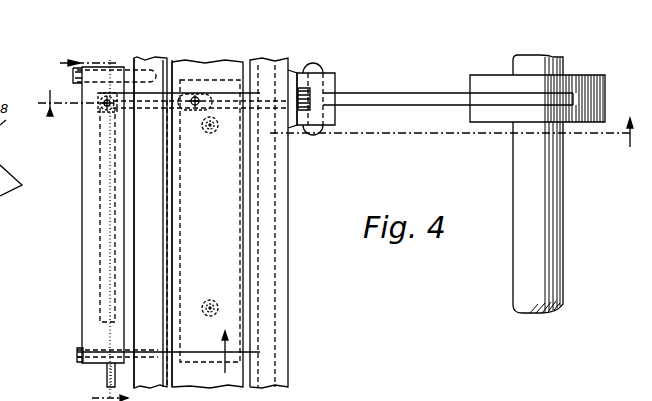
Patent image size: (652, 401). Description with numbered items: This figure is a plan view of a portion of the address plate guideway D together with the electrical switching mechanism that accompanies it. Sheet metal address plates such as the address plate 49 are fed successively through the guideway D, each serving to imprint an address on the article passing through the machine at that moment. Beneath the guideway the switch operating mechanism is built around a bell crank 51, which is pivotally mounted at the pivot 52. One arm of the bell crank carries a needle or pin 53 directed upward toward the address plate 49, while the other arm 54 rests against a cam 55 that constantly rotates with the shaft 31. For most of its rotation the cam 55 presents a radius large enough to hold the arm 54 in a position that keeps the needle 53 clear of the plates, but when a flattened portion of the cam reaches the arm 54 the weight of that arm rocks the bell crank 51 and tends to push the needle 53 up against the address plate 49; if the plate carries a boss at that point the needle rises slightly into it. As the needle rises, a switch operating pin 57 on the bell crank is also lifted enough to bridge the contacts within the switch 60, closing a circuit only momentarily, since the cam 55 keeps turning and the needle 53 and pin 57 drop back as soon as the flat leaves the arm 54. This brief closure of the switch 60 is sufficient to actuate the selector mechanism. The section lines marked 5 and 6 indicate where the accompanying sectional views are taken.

The shaft 31 is at (548, 226).
The address plate 49 is at (225, 282).
The bell crank 51 is at (233, 110).
The pivot 52 is at (314, 128).
The needle or pin 53 is at (189, 111).
The arm 54 is at (458, 105).
The cam 55 is at (600, 78).
The switch operating pin 57 is at (96, 113).
The switch 60 is at (82, 232).
The address plate guideway D is at (290, 301).
The section line 5- 5 is at (339, 118).
The section line 6- 6 is at (85, 70).